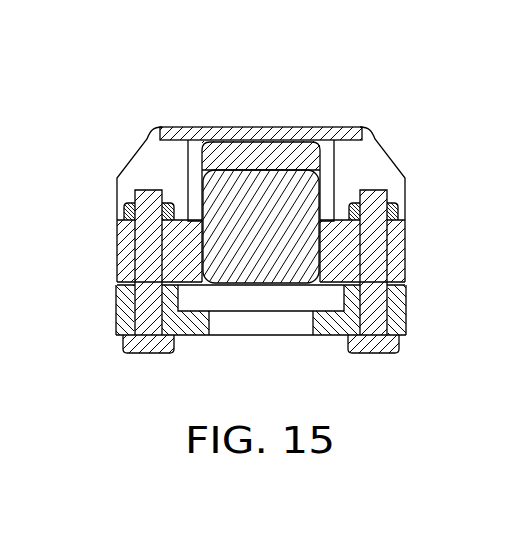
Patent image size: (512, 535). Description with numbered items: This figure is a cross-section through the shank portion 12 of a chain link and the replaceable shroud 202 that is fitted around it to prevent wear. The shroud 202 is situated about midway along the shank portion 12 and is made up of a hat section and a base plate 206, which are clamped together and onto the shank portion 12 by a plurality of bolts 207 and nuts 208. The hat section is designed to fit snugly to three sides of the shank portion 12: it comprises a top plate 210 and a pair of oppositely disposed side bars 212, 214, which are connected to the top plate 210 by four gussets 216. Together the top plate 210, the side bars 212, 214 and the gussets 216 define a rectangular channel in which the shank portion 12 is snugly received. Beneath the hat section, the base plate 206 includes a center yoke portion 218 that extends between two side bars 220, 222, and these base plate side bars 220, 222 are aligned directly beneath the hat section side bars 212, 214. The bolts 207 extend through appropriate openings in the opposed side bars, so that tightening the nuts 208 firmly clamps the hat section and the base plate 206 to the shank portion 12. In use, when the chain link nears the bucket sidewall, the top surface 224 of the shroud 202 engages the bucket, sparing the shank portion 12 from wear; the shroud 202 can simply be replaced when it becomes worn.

The shroud 202 is at (313, 117).
The gussets 216 is at (150, 172).
The top surface 224 is at (193, 128).
The top plate 210 is at (337, 150).
The shank portion 12 is at (277, 257).
The side bar 212 is at (125, 272).
The side bar 214 is at (397, 255).
The nuts 208 is at (393, 203).
The side bar 220 is at (122, 325).
The side bar 222 is at (407, 295).
The center yoke portion 218 is at (222, 325).
The base plate 206 is at (187, 337).
The bolts 207 is at (382, 345).